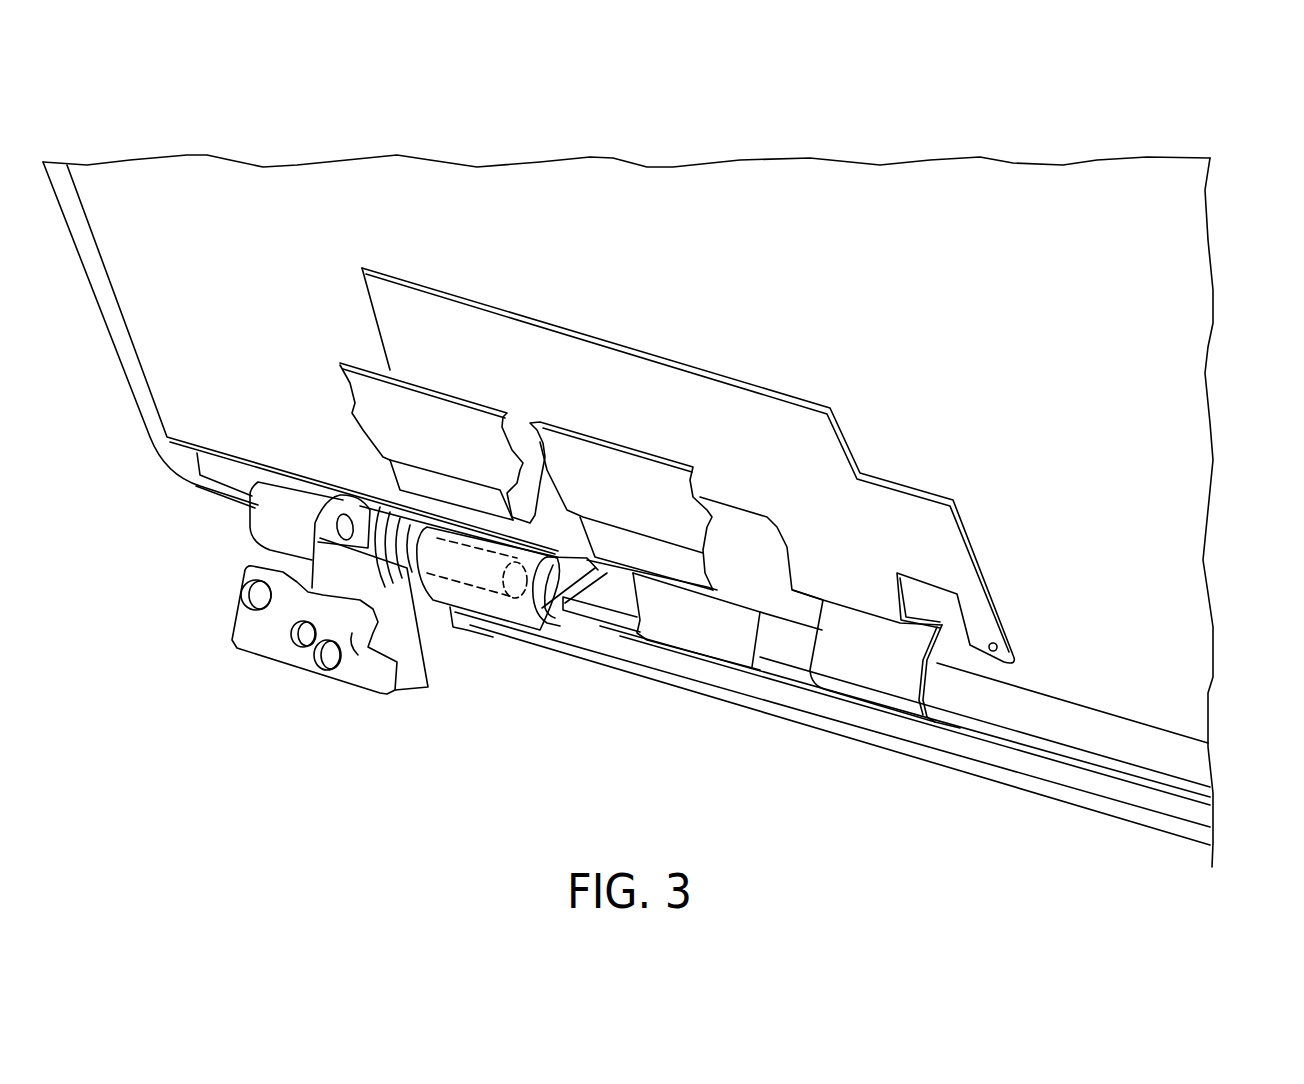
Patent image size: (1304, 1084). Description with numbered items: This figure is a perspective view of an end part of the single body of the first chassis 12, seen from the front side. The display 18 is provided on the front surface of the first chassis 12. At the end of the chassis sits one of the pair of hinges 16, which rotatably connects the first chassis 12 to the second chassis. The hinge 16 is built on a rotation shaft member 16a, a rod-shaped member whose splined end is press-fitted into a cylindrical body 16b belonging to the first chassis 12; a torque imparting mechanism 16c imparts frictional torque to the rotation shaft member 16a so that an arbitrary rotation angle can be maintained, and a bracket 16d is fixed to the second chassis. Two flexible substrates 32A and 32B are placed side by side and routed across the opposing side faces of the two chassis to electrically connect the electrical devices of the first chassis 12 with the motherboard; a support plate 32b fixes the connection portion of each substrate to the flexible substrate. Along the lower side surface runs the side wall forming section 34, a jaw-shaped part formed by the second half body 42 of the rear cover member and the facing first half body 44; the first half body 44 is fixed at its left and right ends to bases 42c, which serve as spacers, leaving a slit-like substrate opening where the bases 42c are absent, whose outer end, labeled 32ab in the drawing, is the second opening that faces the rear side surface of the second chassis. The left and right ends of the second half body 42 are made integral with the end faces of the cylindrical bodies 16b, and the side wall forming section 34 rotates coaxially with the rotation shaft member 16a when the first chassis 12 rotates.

The first chassis 12 is at (1107, 128).
The display 18 is at (1180, 382).
The hinge 16 is at (205, 672).
The rotation shaft member 16a is at (463, 587).
The cylindrical body 16b is at (506, 596).
The torque imparting mechanism 16c is at (262, 524).
The bracket 16d is at (274, 650).
The support plate 32b is at (587, 450).
The flexible substrate 32B is at (701, 630).
The flexible substrate 32A is at (880, 680).
The second opening 32ab is at (778, 676).
The base 42c is at (604, 628).
The second half body 42 is at (1054, 775).
The first half body 44 is at (1120, 750).
The side wall forming section 34 is at (1150, 887).